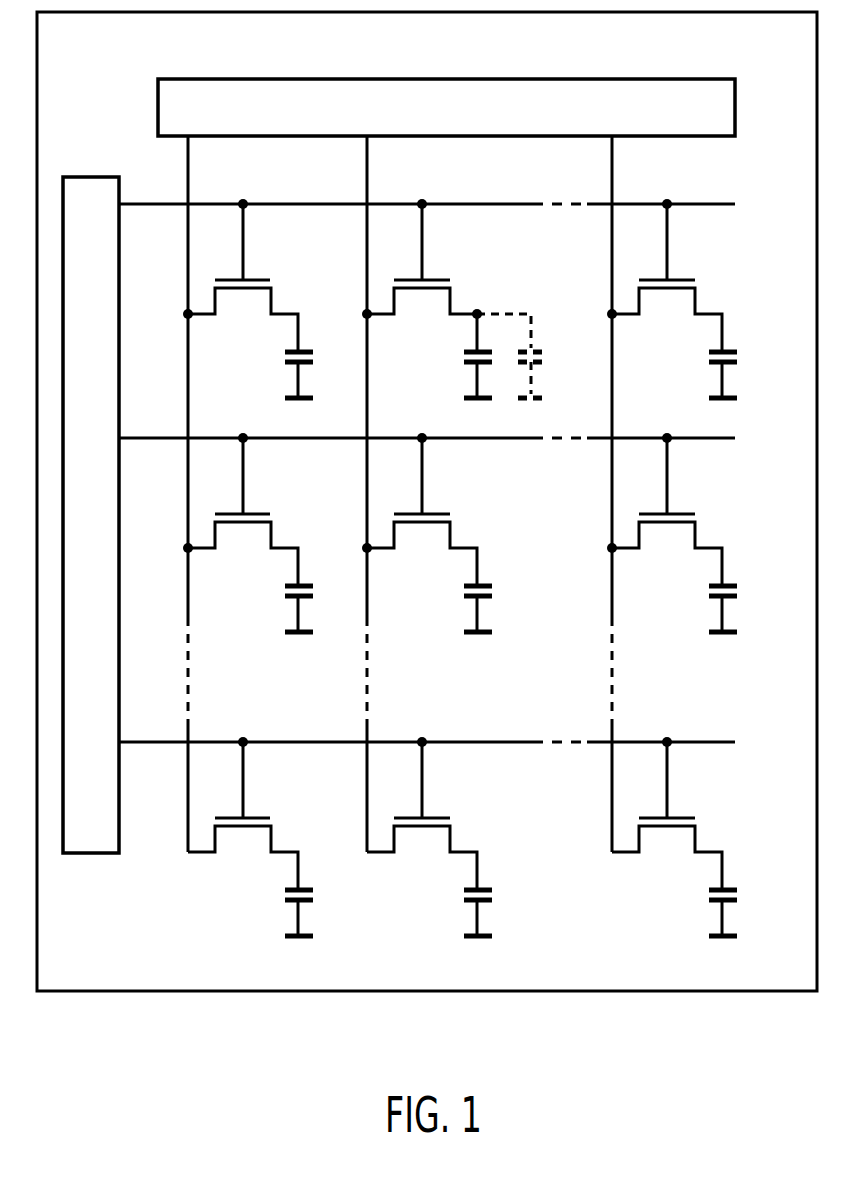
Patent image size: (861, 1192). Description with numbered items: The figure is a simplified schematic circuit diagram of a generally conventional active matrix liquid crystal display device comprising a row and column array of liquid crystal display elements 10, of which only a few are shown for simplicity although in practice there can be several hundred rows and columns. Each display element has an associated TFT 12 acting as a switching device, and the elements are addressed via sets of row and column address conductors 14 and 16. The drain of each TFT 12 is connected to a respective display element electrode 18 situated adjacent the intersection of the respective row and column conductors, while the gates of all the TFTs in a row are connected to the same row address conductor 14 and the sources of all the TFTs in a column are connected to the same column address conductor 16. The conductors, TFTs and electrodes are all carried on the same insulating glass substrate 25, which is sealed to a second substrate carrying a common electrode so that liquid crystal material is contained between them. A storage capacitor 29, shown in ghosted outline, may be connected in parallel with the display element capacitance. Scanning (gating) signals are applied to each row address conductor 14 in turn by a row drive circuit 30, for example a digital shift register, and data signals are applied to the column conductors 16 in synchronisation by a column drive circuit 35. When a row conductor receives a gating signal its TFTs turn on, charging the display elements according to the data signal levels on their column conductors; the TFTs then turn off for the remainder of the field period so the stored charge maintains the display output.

The liquid crystal display element 10 is at (492, 567).
The TFT 12 is at (260, 277).
The row address conductor 14 is at (157, 207).
The column address conductor 16 is at (188, 172).
The display element electrode 18 is at (292, 365).
The substrate 25 is at (163, 992).
The storage capacitor 29 is at (538, 347).
The row drive circuit 30 is at (93, 853).
The column drive circuit 35 is at (509, 78).